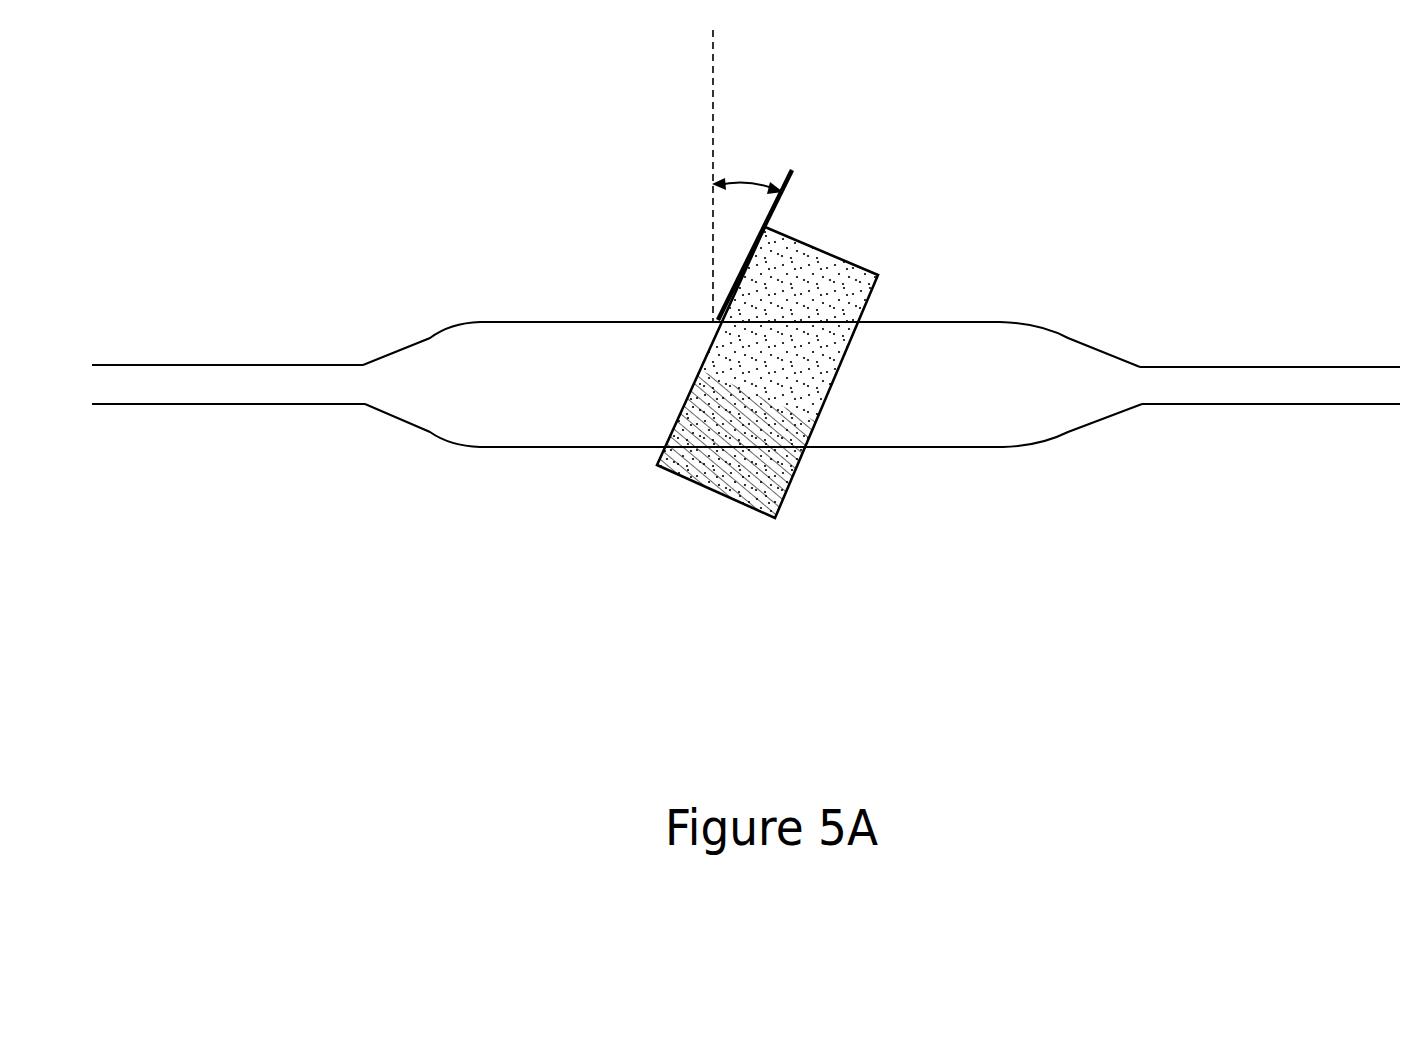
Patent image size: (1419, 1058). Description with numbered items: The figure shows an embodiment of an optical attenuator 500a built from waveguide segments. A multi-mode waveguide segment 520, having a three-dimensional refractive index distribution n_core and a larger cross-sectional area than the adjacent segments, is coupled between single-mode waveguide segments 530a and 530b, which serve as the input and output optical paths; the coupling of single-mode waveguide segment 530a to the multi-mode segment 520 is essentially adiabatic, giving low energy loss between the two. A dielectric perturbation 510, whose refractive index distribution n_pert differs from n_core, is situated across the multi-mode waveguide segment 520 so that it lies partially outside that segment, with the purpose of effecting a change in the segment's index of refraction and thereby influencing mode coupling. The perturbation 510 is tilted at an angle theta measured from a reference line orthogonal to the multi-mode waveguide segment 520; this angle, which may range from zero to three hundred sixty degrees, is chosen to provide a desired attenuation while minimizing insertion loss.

The optical device with single-mode and multi-mode waveguides 500a is at (208, 100).
The perturbation 510 is at (816, 270).
The multi-mode waveguide segment 520 is at (995, 376).
The single-mode waveguide segment 530a is at (360, 648).
The single-mode waveguide segment 530b is at (643, 663).